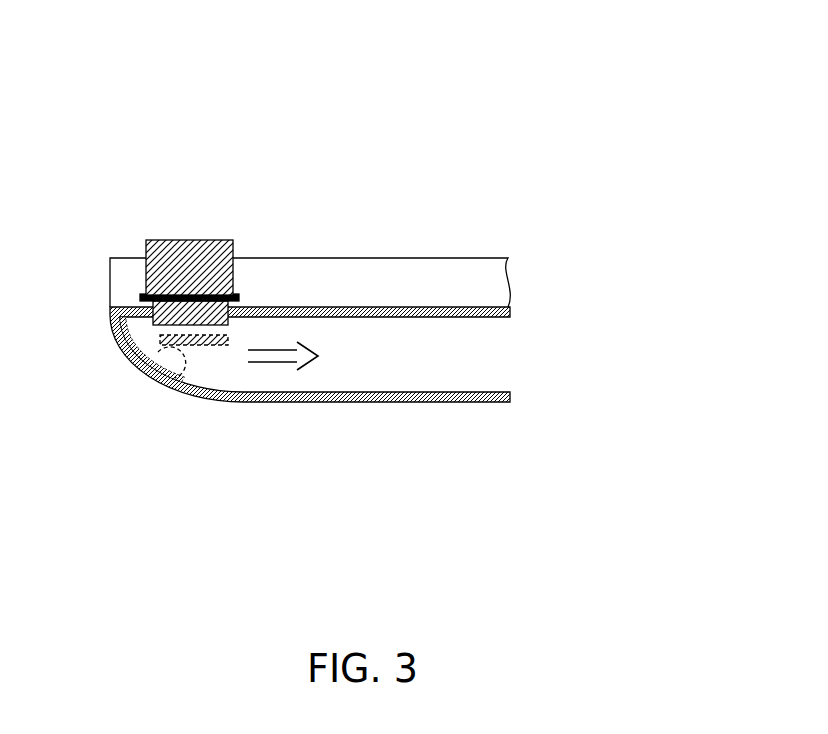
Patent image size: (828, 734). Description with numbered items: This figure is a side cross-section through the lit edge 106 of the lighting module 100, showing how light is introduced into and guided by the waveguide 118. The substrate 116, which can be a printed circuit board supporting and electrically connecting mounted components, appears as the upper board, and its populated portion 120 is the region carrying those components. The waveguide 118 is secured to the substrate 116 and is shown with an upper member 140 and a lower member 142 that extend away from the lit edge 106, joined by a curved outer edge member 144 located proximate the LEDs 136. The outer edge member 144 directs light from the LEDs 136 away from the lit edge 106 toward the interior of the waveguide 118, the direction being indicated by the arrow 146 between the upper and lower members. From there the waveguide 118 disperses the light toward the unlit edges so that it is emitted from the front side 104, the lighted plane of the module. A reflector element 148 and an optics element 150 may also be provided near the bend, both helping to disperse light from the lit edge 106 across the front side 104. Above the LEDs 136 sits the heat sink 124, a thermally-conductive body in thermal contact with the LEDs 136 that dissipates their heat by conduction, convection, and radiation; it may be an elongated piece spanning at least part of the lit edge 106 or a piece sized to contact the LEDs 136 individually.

The lighting module 100 is at (574, 183).
The front side 104 is at (143, 518).
The lit edge 106 is at (155, 178).
The substrate 116 is at (352, 256).
The waveguide 118 is at (385, 408).
The populated portion 120 is at (412, 278).
The heat sink 124 is at (183, 240).
The LEDs 136 is at (148, 322).
The upper member 140 is at (510, 313).
The lower member 142 is at (510, 396).
The outer edge member 144 is at (145, 365).
The arrow 146 is at (279, 363).
The reflector element 148 is at (180, 380).
The optics element 150 is at (212, 345).